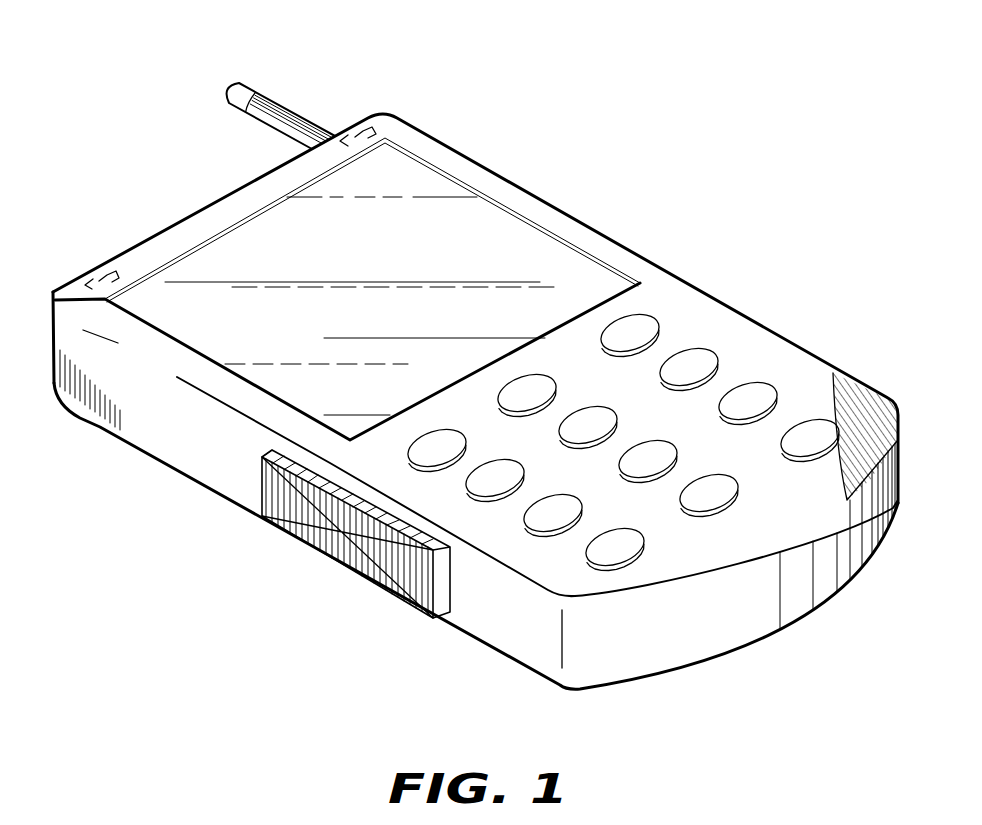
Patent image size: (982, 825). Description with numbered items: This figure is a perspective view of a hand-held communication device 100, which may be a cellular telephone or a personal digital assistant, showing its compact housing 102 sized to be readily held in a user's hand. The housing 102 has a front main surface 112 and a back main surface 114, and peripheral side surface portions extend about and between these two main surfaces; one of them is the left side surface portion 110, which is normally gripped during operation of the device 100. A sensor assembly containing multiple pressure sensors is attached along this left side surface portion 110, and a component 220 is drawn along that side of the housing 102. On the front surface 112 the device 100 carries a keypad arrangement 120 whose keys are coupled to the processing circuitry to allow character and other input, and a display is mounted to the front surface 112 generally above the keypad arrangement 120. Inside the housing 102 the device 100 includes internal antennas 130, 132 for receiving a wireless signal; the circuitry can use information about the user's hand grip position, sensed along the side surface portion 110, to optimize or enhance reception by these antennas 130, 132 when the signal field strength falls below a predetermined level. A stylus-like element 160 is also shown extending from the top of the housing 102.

The hand-held communication device 100 is at (630, 37).
The housing 102 is at (458, 134).
The left side surface portion 110 is at (173, 425).
The front surface 112 is at (695, 318).
The back surface 114 is at (544, 690).
The keypad arrangement 120 is at (790, 381).
The internal antenna 130 is at (94, 268).
The internal antenna 132 is at (352, 118).
The stylus 160 is at (278, 97).
The connector 220 is at (345, 550).